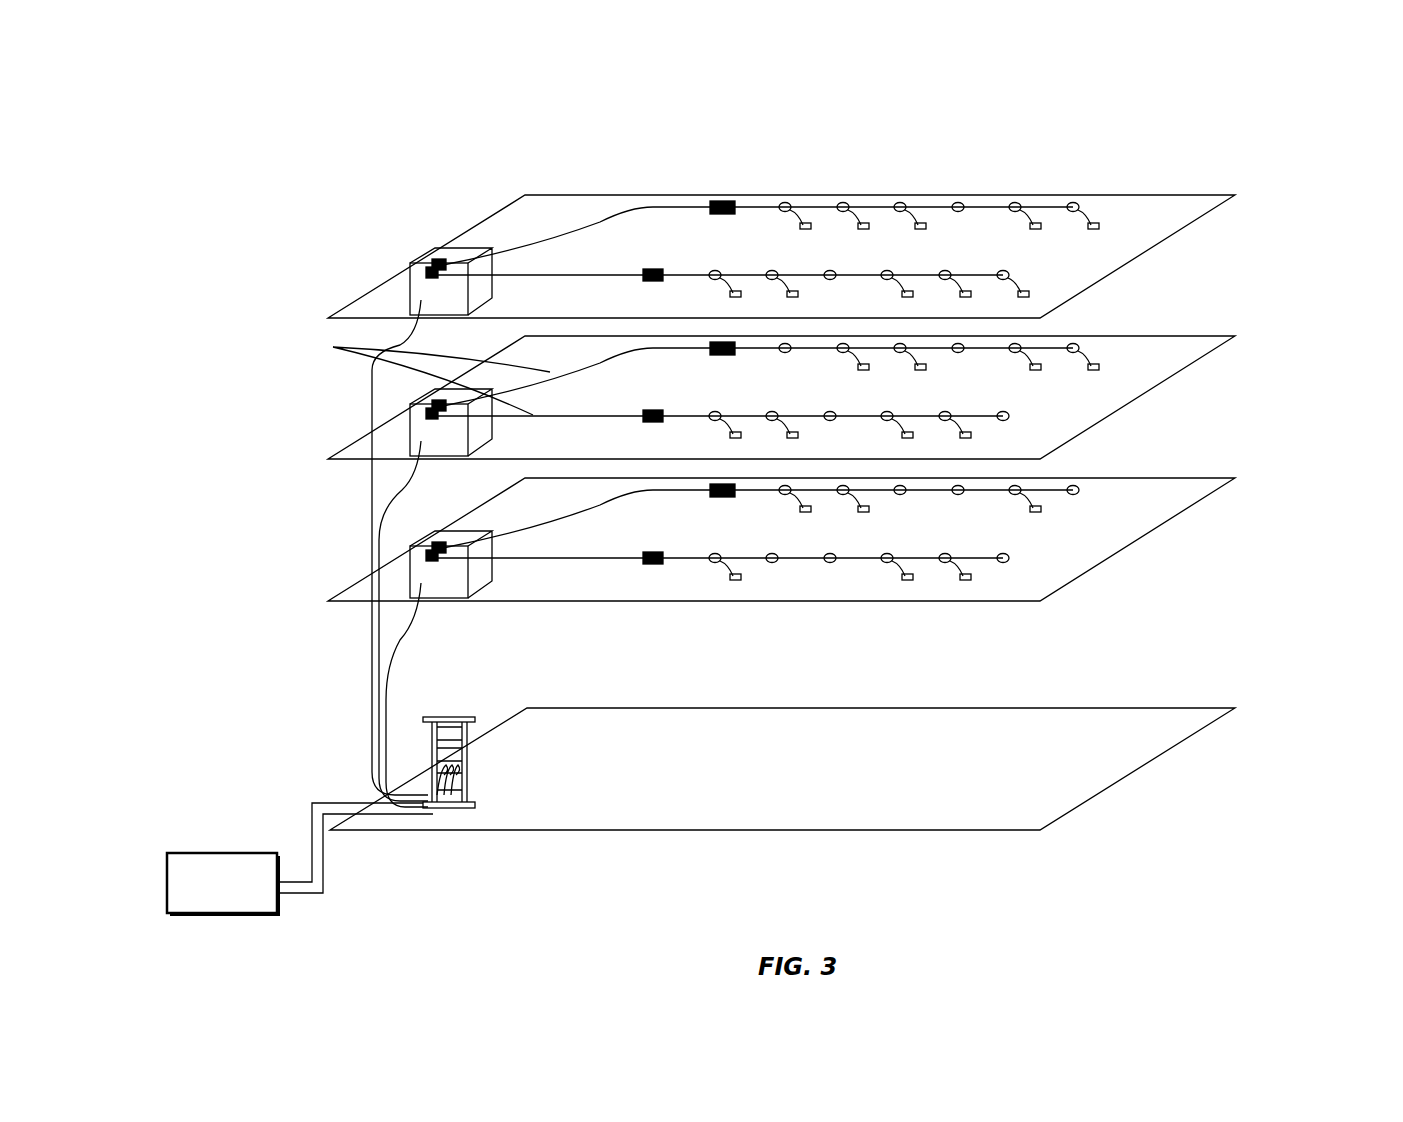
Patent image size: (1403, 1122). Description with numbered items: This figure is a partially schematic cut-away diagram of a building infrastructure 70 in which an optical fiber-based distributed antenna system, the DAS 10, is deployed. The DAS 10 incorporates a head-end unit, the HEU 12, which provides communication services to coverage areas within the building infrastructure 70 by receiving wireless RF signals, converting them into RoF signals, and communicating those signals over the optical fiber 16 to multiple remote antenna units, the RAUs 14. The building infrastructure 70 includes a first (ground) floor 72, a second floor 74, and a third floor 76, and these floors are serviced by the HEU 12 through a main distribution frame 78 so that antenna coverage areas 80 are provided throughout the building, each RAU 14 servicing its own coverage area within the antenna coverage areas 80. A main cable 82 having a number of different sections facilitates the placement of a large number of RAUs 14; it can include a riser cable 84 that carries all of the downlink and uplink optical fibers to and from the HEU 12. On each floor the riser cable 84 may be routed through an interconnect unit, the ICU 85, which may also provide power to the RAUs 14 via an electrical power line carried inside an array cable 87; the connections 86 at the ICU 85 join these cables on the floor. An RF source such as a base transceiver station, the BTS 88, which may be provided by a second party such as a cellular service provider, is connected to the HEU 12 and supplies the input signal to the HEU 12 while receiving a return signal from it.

The DAS 10 is at (918, 122).
The HEU 12 is at (477, 768).
The RAUs 14 is at (1040, 224).
The optical fiber 16 is at (585, 225).
The building infrastructure 70 is at (295, 475).
The first (ground) floor 72 is at (1180, 445).
The second floor 74 is at (1187, 285).
The third floor 76 is at (1222, 165).
The main distribution frame 78 is at (458, 752).
The antenna coverage areas 80 is at (1015, 327).
The main cable 82 is at (327, 600).
The riser cable 84 is at (370, 673).
The interconnect unit (ICU) 85 is at (430, 262).
The jumper cables 86 is at (424, 375).
The array cable 87 is at (645, 207).
The base transceiver station (BTS) 88 is at (215, 913).